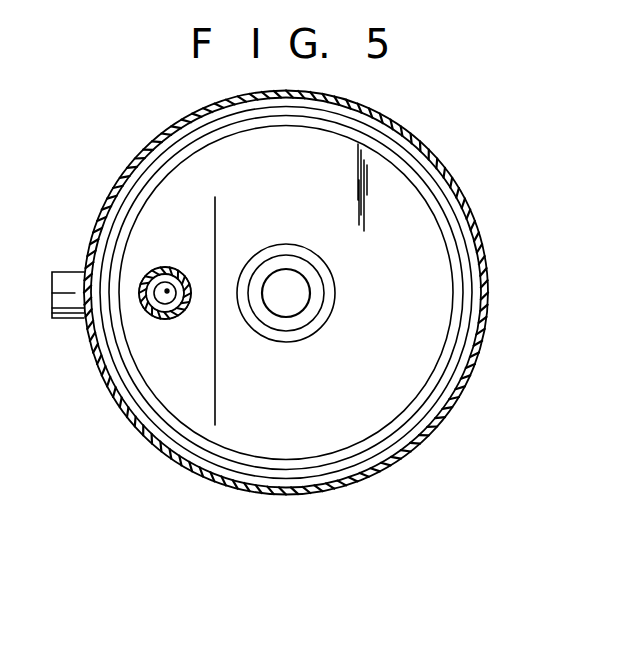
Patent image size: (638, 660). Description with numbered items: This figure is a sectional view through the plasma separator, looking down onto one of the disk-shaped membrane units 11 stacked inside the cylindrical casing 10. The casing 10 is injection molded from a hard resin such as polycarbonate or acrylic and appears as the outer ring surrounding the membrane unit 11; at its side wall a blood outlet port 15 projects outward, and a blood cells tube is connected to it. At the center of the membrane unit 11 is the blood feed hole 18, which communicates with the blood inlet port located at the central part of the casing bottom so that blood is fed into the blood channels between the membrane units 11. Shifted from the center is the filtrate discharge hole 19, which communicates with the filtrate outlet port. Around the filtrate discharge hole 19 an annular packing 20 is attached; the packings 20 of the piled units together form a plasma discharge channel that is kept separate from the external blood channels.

The cylindrical casing 10 is at (474, 214).
The membrane unit 11 is at (398, 196).
The blood outlet port 15 is at (68, 310).
The blood feed hole 18 is at (304, 286).
The filtrate discharge hole 19 is at (167, 291).
The annular packing 20 is at (183, 315).